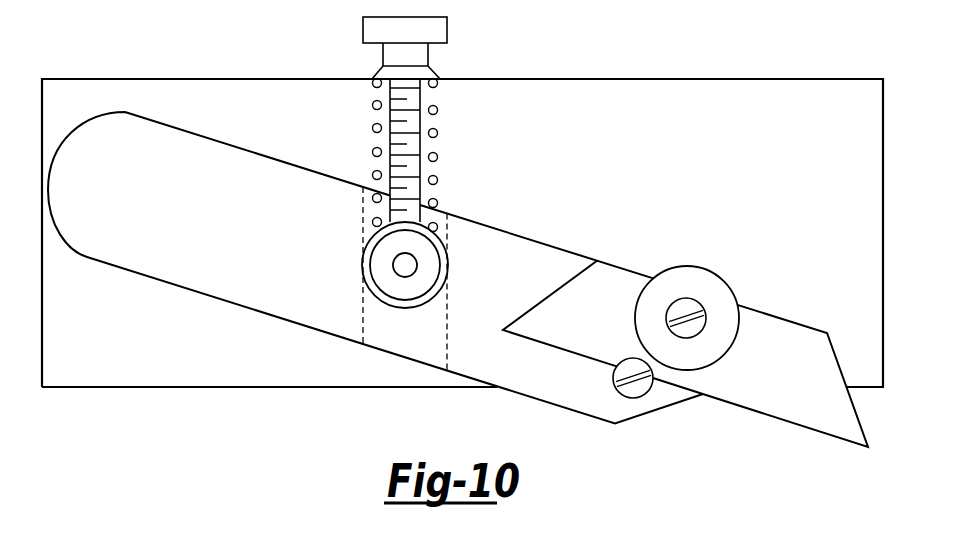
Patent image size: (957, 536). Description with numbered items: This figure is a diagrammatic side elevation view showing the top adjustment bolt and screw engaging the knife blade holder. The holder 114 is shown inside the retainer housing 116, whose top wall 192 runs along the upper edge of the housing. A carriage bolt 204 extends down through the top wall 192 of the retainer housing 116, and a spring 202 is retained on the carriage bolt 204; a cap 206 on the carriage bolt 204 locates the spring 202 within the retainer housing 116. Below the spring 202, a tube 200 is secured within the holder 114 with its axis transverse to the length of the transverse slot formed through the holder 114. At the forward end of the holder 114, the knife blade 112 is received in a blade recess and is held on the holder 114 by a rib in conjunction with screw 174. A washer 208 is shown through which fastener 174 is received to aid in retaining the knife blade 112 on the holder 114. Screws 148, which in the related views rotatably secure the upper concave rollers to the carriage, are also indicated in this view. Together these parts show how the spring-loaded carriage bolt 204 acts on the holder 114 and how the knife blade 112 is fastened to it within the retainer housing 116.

The knife blade 112 is at (817, 414).
The holder 114 is at (200, 282).
The retainer housing 116 is at (727, 92).
The screws 148 is at (448, 320).
The screw 174 is at (698, 326).
The top wall 192 is at (173, 78).
The tube 200 is at (393, 300).
The spring 202 is at (437, 132).
The carriage bolt 204 is at (436, 24).
The cap 206 is at (425, 75).
The washer 208 is at (686, 285).